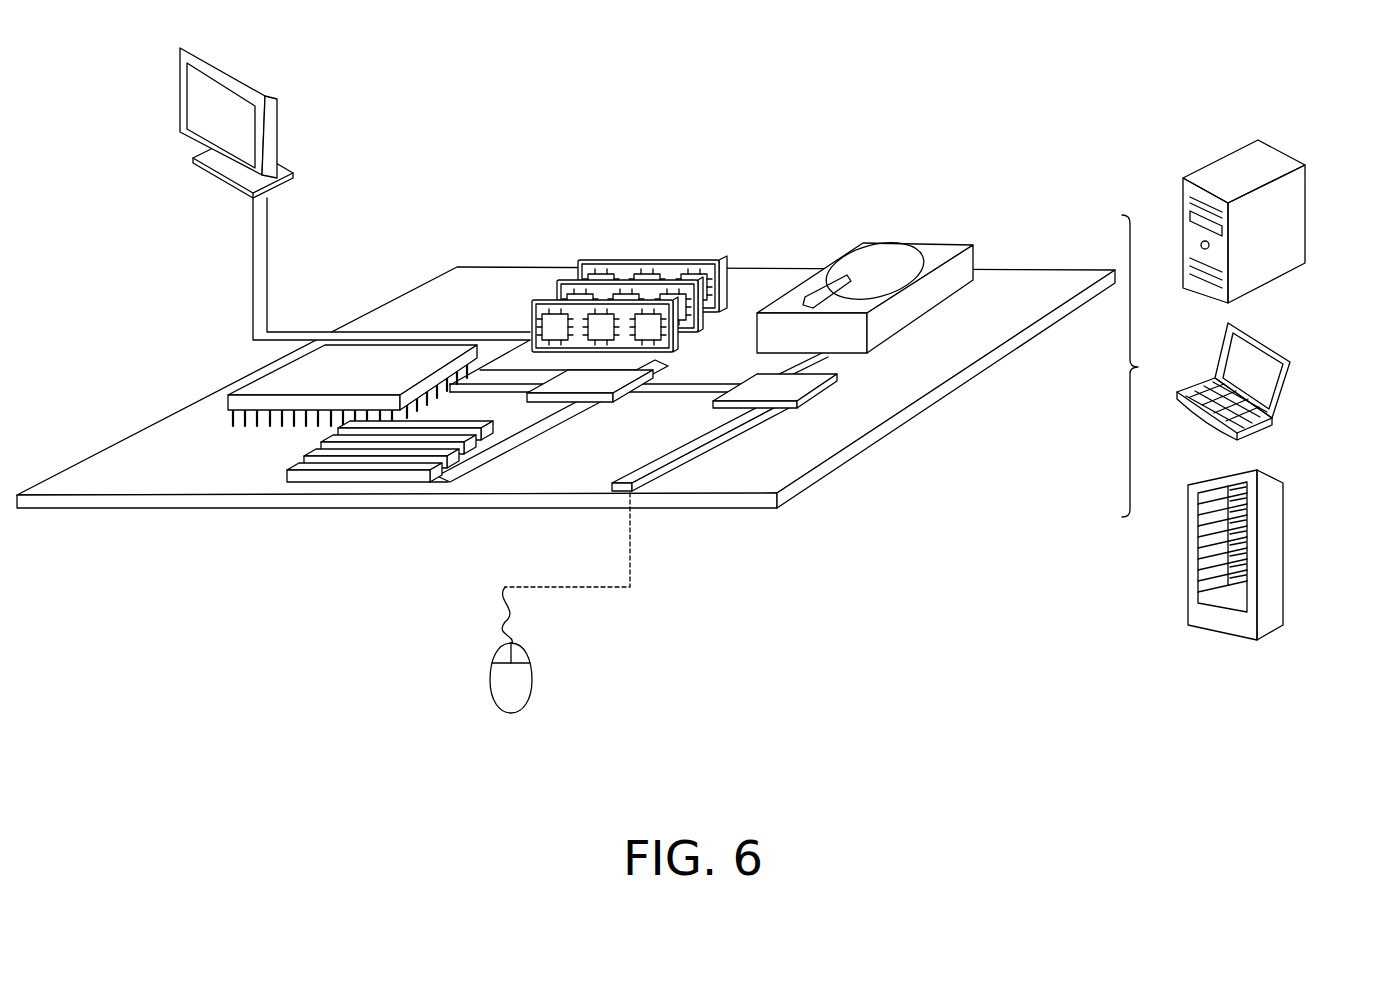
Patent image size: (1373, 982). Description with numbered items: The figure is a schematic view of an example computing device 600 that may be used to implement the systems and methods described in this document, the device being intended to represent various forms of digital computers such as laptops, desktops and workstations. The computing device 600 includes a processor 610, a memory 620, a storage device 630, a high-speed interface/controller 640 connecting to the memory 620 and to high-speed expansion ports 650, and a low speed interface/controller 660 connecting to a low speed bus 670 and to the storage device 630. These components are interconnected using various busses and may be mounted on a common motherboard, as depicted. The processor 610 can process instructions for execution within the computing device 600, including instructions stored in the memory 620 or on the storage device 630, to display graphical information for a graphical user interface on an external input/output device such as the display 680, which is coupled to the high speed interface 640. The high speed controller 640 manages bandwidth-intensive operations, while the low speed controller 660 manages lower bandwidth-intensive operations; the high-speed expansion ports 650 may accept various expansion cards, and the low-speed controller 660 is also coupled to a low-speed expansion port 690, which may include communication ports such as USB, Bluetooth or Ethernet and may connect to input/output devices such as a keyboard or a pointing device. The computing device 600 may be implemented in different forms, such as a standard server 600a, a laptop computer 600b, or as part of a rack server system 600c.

The computing device 600 is at (731, 118).
The processor 610 is at (227, 398).
The memory 620 is at (647, 262).
The storage device 630 is at (915, 243).
The high-speed interface/controller 640 is at (593, 403).
The high-speed expansion ports 650 is at (287, 472).
The low speed interface/controller 660 is at (760, 386).
The low speed bus 670 is at (716, 445).
The display 680 is at (180, 97).
The low-speed expansion port 690 is at (637, 497).
The standard server 600a is at (1218, 160).
The laptop computer 600b is at (1270, 347).
The rack server system 600c is at (1278, 535).